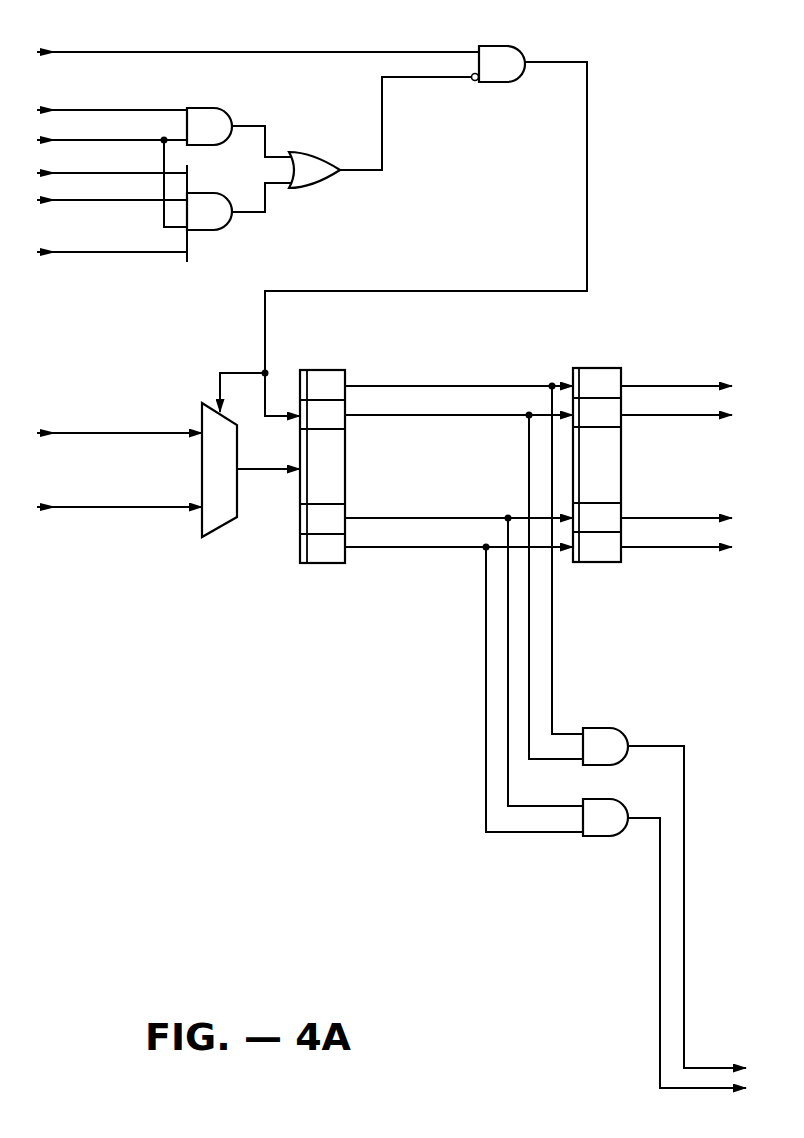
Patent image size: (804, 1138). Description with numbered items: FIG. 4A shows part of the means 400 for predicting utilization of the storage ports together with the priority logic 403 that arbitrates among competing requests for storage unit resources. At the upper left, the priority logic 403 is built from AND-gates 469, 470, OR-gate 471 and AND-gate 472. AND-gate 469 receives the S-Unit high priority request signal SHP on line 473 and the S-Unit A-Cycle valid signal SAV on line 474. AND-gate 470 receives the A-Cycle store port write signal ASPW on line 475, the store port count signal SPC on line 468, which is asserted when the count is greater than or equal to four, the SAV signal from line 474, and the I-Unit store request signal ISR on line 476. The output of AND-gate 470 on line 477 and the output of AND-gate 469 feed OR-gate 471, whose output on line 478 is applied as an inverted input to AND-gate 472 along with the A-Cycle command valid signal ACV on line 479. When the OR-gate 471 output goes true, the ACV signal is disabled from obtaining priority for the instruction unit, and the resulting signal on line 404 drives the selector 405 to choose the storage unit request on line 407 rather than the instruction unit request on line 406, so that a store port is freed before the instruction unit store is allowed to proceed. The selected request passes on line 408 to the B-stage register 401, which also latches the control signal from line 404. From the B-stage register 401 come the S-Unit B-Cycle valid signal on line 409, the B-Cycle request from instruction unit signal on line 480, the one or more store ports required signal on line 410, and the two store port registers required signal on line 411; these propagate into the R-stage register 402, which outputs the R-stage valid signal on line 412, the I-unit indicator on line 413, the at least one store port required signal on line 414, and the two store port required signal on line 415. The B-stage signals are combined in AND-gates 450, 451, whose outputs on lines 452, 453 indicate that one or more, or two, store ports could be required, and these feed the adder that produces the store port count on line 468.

The means for predicting utilization of the storage ports 400 is at (408, 917).
The B-stage register 401 is at (318, 564).
The R-stage register 402 is at (612, 563).
The priority logic 403 is at (632, 126).
The line 404 is at (588, 255).
The selector 405 is at (222, 530).
The line 406 is at (167, 433).
The line 407 is at (167, 508).
The line 408 is at (249, 468).
The line 409 is at (490, 385).
The line 410 is at (445, 548).
The line 411 is at (458, 517).
The line 412 is at (688, 385).
The line 413 is at (676, 416).
The line 414 is at (708, 548).
The line 415 is at (701, 517).
The AND-gate 450 is at (595, 837).
The AND-gate 451 is at (618, 736).
The line 452 is at (660, 945).
The line 453 is at (686, 888).
The line 468 is at (157, 201).
The AND-gate 469 is at (220, 108).
The AND-gate 470 is at (216, 193).
The OR-gate 471 is at (312, 160).
The AND-gate 472 is at (520, 30).
The line 473 is at (156, 109).
The line 474 is at (122, 140).
The line 475 is at (160, 173).
The line 476 is at (110, 253).
The line 477 is at (249, 213).
The line 478 is at (383, 130).
The line 479 is at (235, 52).
The line 480 is at (452, 416).